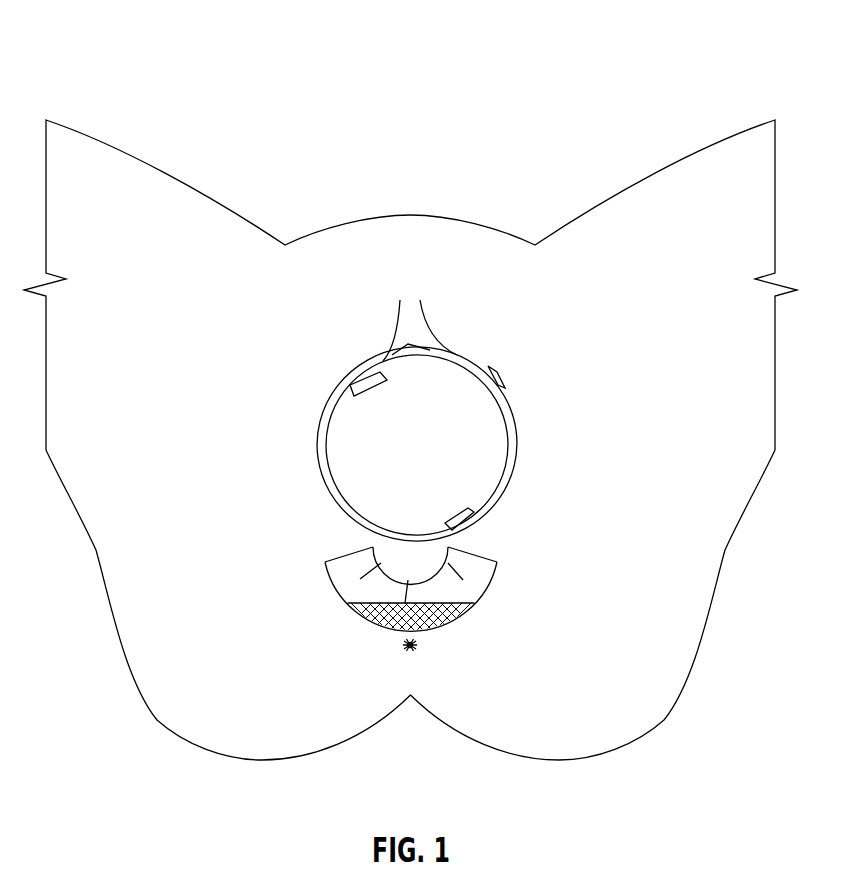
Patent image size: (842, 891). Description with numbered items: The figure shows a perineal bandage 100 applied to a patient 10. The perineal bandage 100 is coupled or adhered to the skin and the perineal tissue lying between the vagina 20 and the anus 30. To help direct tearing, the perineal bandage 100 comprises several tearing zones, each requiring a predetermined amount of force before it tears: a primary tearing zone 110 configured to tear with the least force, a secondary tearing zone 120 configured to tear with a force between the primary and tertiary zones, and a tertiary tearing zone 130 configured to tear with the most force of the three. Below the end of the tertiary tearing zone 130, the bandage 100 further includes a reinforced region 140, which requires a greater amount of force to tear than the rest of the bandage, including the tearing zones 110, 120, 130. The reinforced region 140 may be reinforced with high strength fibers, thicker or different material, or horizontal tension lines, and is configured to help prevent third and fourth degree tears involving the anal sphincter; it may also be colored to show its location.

The patient 10 is at (126, 54).
The vagina 20 is at (480, 364).
The anus 30 is at (404, 650).
The perineal bandage 100 is at (400, 571).
The primary tearing zone 110 is at (372, 550).
The secondary tearing zone 120 is at (462, 550).
The tertiary tearing zone 130 is at (403, 587).
The reinforced region 140 is at (453, 613).